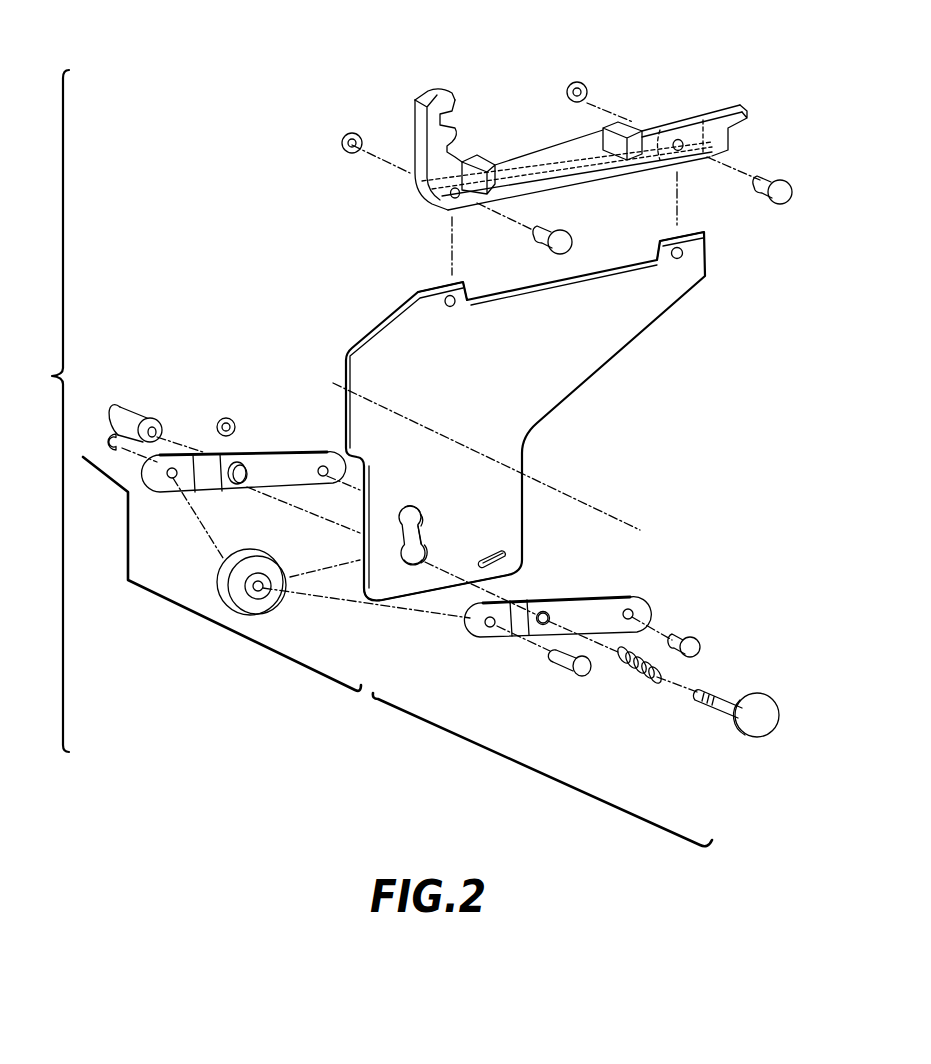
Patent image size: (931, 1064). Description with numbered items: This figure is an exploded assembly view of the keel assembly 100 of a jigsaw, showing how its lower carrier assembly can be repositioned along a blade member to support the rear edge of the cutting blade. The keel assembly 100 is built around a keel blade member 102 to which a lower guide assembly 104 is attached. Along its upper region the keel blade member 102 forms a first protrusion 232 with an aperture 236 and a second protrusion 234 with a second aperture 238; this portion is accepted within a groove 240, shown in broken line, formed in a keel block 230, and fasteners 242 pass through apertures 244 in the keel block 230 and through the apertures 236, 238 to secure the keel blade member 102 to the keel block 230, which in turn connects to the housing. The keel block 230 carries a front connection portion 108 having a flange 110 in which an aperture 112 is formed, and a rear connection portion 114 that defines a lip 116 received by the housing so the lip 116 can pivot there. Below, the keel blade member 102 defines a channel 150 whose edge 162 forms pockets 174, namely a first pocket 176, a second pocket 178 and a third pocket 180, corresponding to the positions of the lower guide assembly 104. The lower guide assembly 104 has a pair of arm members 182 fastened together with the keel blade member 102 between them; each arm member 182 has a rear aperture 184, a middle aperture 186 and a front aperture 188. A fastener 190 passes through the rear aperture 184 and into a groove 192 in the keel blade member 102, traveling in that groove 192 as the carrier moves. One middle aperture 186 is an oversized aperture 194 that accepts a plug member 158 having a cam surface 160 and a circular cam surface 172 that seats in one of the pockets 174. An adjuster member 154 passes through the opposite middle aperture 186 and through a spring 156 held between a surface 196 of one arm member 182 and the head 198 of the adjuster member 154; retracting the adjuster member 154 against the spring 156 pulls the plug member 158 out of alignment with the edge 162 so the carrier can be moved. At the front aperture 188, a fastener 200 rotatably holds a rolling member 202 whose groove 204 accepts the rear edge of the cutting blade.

The keel assembly 100 is at (42, 411).
The keel blade member 102 is at (488, 375).
The lower guide assembly 104 is at (397, 651).
The front connection portion 108 is at (582, 143).
The flange 110 is at (428, 90).
The aperture 112 is at (460, 114).
The rear connection portion 114 is at (742, 131).
The lip 116 is at (742, 105).
The channel 150 is at (454, 541).
The adjuster member 154 is at (727, 707).
The spring 156 is at (633, 674).
The plug member 158 is at (152, 408).
The cam surface 160 is at (132, 397).
The edge 162 is at (420, 548).
The circular cam surface 172 is at (122, 408).
The pockets 174 is at (448, 543).
The first pocket 176 is at (424, 514).
The second pocket 178 is at (427, 532).
The third pocket 180 is at (423, 560).
The arm members 182 is at (280, 465).
The rear aperture 184 is at (325, 478).
The middle aperture 186 is at (250, 466).
The front aperture 188 is at (175, 480).
The fastener 190 is at (232, 418).
The groove 192 is at (506, 555).
The oversized aperture 194 is at (236, 460).
The surface 196 is at (556, 618).
The head 198 is at (760, 705).
The fastener 200 is at (110, 434).
The rolling member 202 is at (264, 592).
The groove 204 is at (343, 574).
The keel block 230 is at (643, 112).
The first protrusion 232 is at (430, 290).
The second protrusion 234 is at (700, 244).
The aperture 236 is at (457, 307).
The second aperture 238 is at (686, 259).
The groove 240 is at (548, 168).
The fasteners 242 is at (573, 84).
The apertures 244 is at (681, 141).